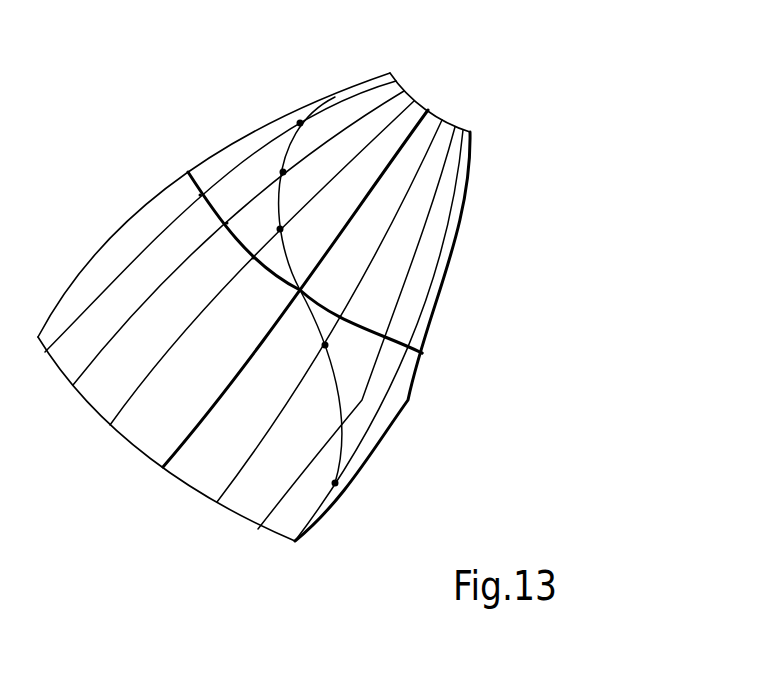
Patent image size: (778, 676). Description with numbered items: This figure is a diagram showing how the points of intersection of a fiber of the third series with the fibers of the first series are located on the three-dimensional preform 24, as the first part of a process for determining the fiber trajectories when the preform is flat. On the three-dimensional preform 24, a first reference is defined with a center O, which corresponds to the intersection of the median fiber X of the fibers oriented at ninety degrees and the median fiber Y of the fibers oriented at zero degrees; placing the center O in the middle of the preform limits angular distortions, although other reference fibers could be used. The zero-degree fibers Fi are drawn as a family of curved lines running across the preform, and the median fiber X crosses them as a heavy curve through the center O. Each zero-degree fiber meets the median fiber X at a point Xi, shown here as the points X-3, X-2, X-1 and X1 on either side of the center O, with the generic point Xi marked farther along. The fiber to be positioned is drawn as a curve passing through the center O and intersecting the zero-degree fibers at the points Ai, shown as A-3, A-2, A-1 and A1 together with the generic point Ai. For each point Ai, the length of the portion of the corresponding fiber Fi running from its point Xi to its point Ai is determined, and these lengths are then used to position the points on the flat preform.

The three-dimensional preform 24 is at (500, 150).
The center O is at (305, 290).
The point A-3 is at (300, 123).
The point A-2 is at (283, 172).
The point A-1 is at (280, 229).
The point A1 is at (325, 345).
The point Ai is at (335, 483).
The point X-3 is at (200, 195).
The point X-2 is at (227, 223).
The point X-1 is at (253, 258).
The point X1 is at (340, 317).
The point Xi is at (422, 353).